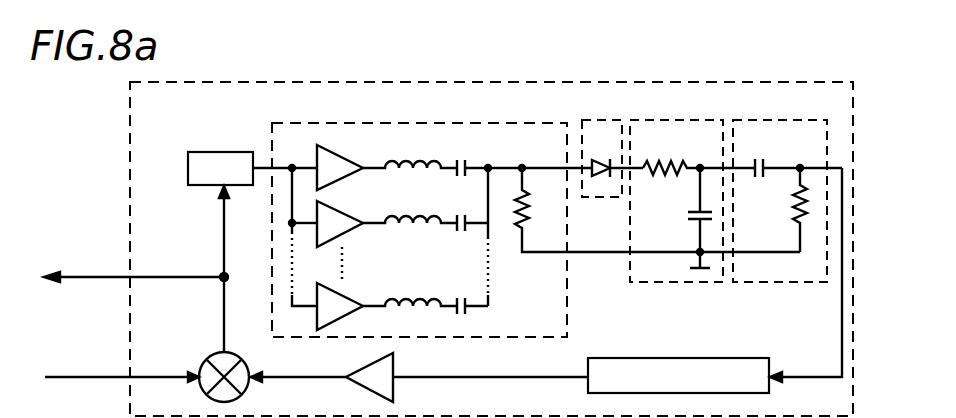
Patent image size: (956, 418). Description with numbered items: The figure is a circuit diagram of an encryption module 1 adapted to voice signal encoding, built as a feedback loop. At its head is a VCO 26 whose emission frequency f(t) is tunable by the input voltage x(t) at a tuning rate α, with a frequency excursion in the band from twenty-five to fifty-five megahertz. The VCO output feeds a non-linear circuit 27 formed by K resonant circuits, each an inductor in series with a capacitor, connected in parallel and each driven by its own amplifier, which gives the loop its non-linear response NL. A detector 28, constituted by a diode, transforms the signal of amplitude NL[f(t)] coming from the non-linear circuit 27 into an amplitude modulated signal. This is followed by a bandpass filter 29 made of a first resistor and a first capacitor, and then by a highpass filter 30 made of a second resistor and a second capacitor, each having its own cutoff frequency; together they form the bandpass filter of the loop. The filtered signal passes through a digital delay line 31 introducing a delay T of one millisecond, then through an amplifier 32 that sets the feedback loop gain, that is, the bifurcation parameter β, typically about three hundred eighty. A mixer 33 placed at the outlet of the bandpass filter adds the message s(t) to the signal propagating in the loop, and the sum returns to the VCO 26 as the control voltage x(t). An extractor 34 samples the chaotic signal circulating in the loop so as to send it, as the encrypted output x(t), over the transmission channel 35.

The oscillator system 1 is at (155, 119).
The VCO 26 is at (223, 152).
The non-linear circuit 27 is at (415, 125).
The detector 28 is at (597, 123).
The bandpass filter 29 is at (688, 123).
The highpass filter 30 is at (793, 123).
The digital delay line 31 is at (673, 358).
The amplifier 32 is at (390, 368).
The mixer 33 is at (212, 363).
The extractor 34 is at (221, 275).
The transmission channel 35 is at (70, 279).